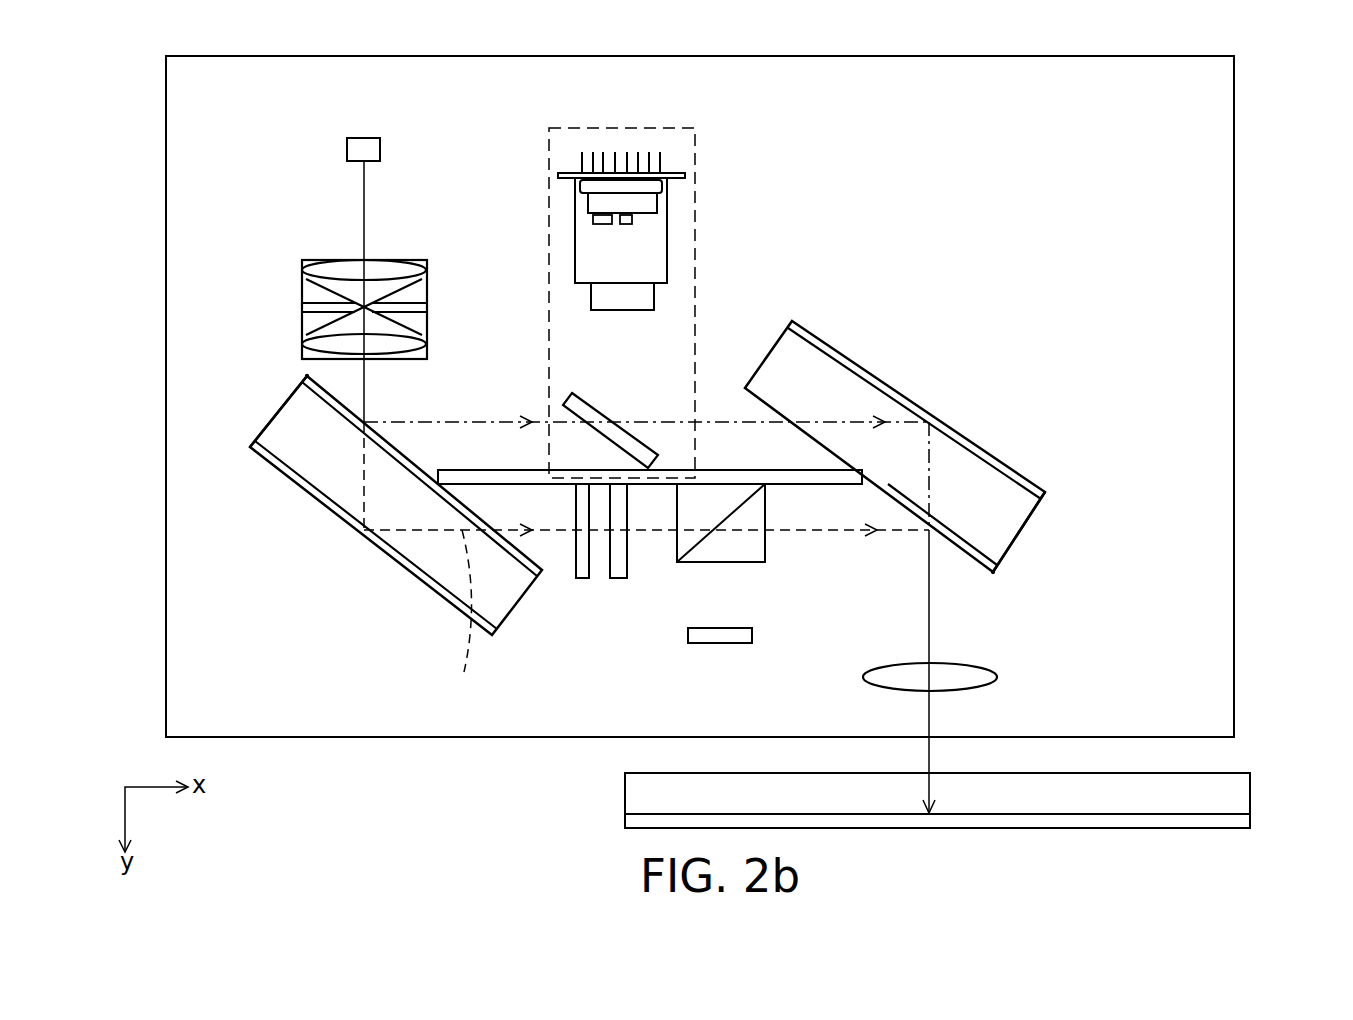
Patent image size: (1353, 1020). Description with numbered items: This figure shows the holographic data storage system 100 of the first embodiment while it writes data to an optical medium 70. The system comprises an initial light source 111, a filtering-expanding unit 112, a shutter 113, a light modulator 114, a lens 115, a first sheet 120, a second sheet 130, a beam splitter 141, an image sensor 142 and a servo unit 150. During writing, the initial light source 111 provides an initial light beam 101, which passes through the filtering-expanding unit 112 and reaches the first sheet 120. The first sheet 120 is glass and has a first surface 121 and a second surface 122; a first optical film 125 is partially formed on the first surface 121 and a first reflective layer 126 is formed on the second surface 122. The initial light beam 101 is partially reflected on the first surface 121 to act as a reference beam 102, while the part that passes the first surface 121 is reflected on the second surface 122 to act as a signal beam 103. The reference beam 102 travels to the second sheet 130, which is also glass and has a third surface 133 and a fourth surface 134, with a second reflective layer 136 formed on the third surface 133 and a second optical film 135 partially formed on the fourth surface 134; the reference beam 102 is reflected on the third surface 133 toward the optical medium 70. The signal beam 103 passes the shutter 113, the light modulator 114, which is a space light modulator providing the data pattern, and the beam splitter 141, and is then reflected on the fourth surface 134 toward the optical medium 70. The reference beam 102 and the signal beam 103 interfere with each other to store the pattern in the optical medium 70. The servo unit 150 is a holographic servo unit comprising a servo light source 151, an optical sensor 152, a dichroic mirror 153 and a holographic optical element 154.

The optical medium 70 is at (1252, 817).
The holographic data storage system 100 is at (166, 123).
The initial light beam 101 is at (364, 206).
The reference beam 102 is at (494, 421).
The signal beam 103 is at (470, 615).
The initial light source 111 is at (364, 137).
The filtering-expanding unit 112 is at (302, 291).
The shutter 113 is at (583, 580).
The light modulator 114 is at (622, 580).
The lens 115 is at (997, 677).
The first sheet 120 is at (520, 601).
The first surface 121 is at (312, 388).
The second surface 122 is at (258, 447).
The first optical film 125 is at (305, 373).
The first reflective layer 126 is at (420, 578).
The second sheet 130 is at (1030, 528).
The third surface 133 is at (1030, 498).
The fourth surface 134 is at (1003, 553).
The second optical film 135 is at (987, 572).
The second reflective layer 136 is at (980, 443).
The beam splitter 141 is at (765, 553).
The image sensor 142 is at (752, 636).
The servo unit 150 is at (695, 258).
The servo light source 151 is at (634, 216).
The optical sensor 152 is at (593, 218).
The dichroic mirror 153 is at (582, 392).
The holographic optical element 154 is at (591, 295).